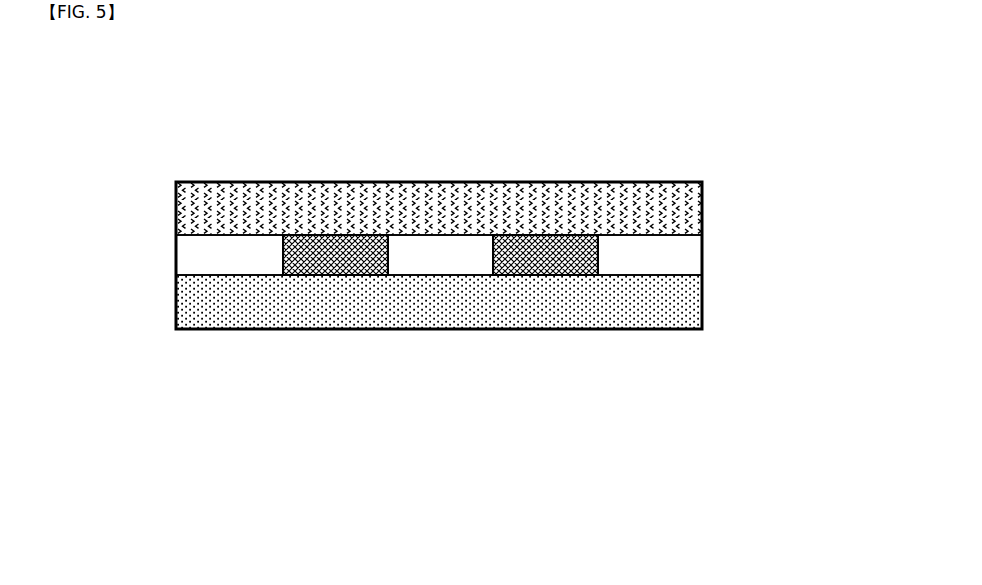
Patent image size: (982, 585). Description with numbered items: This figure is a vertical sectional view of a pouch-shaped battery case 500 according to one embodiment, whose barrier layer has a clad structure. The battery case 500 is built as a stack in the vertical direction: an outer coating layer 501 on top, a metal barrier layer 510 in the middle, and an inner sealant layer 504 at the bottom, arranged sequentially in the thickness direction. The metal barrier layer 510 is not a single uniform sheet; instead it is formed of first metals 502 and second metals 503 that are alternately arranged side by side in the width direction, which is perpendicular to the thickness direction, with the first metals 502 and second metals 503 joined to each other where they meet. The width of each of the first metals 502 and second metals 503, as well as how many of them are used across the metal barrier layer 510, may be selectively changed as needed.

The pouch-shaped battery case 500 is at (130, 145).
The outer coating layer 501 is at (703, 197).
The first metals 502 is at (550, 275).
The second metals 503 is at (625, 275).
The inner sealant layer 504 is at (703, 297).
The metal barrier layer 510 is at (439, 352).